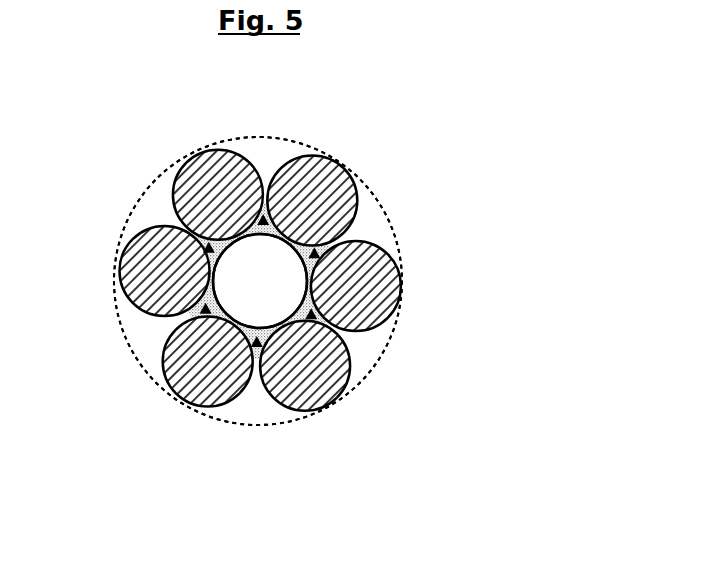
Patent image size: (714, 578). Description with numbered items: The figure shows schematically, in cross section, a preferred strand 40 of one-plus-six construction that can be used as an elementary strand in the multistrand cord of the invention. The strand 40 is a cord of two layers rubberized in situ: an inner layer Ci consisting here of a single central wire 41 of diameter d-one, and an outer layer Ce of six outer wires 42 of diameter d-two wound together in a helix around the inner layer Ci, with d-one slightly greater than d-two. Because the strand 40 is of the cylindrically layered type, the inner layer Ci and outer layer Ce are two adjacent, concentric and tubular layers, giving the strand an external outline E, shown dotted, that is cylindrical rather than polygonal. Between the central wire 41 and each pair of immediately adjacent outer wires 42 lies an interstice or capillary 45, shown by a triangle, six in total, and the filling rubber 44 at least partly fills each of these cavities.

The strand 40 is at (253, 279).
The central wire 41 is at (258, 280).
The outer wires 42 is at (207, 363).
The filling rubber 44 is at (199, 233).
The interstices or capillaries 45 is at (265, 222).
The external outline E is at (358, 387).
The inner layer Ci is at (285, 267).
The outer layer Ce is at (253, 397).